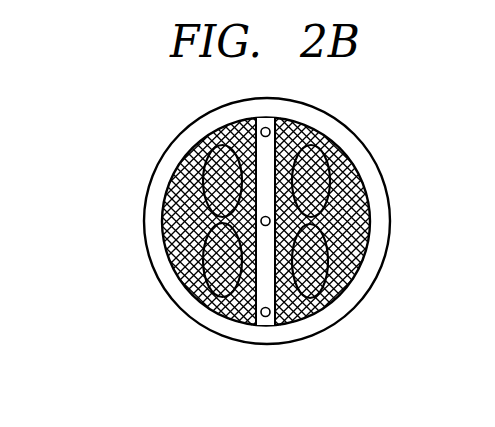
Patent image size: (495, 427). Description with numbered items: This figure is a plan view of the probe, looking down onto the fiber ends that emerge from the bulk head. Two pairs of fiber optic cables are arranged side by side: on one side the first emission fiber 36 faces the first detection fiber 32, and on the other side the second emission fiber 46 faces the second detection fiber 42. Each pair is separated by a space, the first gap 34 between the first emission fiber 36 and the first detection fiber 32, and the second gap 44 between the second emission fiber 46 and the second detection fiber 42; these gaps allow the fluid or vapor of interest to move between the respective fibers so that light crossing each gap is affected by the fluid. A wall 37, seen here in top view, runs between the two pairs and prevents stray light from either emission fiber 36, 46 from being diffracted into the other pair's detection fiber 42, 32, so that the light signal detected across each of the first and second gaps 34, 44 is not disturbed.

The first detection fiber 32 is at (358, 172).
The first gap 34 is at (307, 219).
The first emission fiber 36 is at (325, 285).
The wall 37 is at (263, 150).
The second detection fiber 42 is at (201, 159).
The second gap 44 is at (222, 220).
The second emission fiber 46 is at (200, 284).